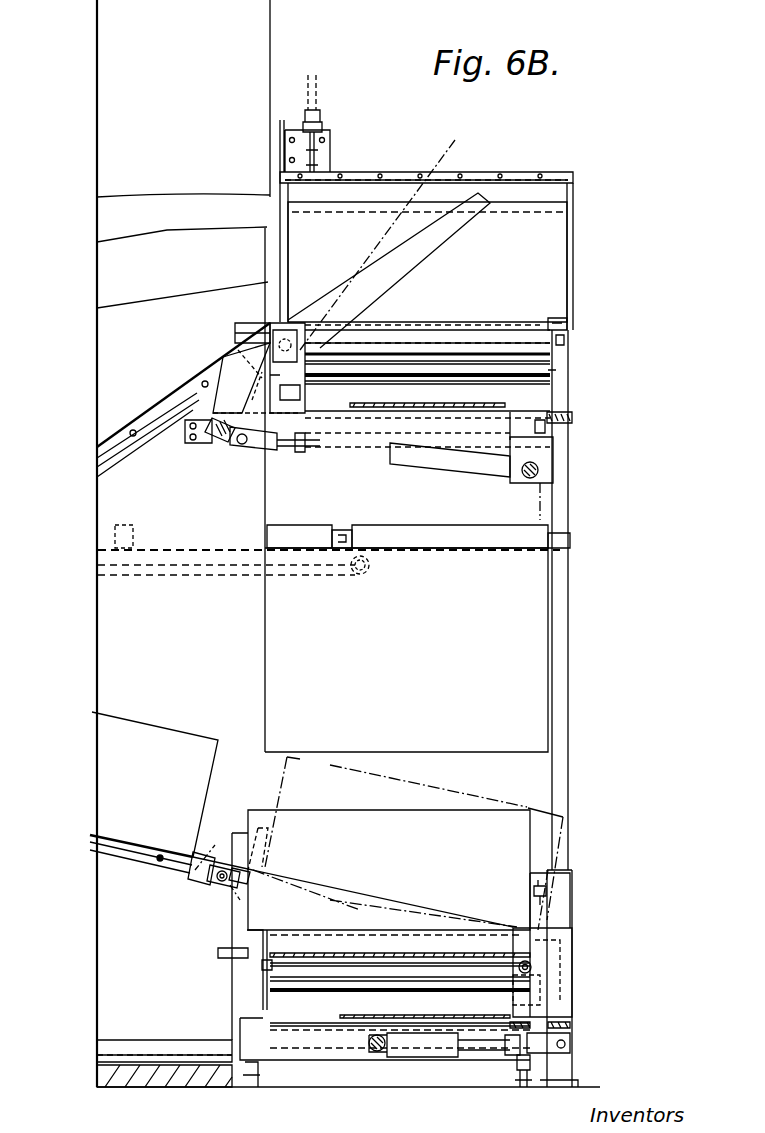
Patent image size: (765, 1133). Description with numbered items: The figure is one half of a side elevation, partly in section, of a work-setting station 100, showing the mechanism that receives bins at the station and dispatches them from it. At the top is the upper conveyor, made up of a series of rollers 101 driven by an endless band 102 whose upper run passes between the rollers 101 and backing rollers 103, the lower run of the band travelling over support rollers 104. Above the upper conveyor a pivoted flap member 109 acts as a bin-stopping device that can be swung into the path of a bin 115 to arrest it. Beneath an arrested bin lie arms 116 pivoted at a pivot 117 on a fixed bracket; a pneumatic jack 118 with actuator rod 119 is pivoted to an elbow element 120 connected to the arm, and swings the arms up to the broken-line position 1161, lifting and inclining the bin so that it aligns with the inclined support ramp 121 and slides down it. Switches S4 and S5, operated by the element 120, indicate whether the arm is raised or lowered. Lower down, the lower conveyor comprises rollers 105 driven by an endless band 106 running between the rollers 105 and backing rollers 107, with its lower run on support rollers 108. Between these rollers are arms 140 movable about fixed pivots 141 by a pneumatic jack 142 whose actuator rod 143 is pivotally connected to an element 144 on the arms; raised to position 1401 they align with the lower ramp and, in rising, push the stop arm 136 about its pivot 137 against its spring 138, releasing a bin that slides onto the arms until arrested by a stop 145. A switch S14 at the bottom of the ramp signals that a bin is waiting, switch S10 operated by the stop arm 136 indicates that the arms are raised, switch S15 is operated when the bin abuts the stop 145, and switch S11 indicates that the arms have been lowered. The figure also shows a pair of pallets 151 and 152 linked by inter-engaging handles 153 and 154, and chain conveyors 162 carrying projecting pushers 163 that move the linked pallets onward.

The work-setting station 100 is at (242, 93).
The rollers 101 is at (570, 350).
The endless band 102 is at (510, 353).
The backing rollers 103 is at (520, 383).
The support rollers 104 is at (530, 405).
The rollers 105 is at (312, 918).
The endless band 106 is at (525, 985).
The backing rollers 107 is at (262, 990).
The support rollers 108 is at (520, 1013).
The flap member 109 is at (525, 185).
The bin 115 is at (545, 237).
The arms 116 is at (548, 322).
The raised position of arms 1161 is at (412, 240).
The pivot 117 is at (265, 333).
The pneumatic jack 118 is at (478, 470).
The actuator rod 119 is at (292, 447).
The elbow element 120 is at (240, 388).
The inclined support ramp 121 is at (145, 416).
The stop arm 136 is at (205, 860).
The pivot 137 is at (218, 890).
The spring 138 is at (218, 953).
The arms 140 is at (363, 937).
The raised position of arms 1401 is at (258, 828).
The fixed pivots 141 is at (531, 967).
The pneumatic jack 142 is at (445, 1040).
The actuator rod 143 is at (478, 1040).
The element 144 is at (555, 978).
The stop 145 is at (545, 905).
The pallet 151 is at (283, 540).
The pallet 152 is at (480, 540).
The handle 153 is at (370, 530).
The handle 154 is at (340, 530).
The chain conveyors 162 is at (302, 578).
The pushers 163 is at (195, 578).
The switch S4 is at (213, 446).
The switch S5 is at (322, 358).
The switch S10 is at (198, 880).
The switch S11 is at (262, 965).
The switch S14 is at (170, 871).
The switch S15 is at (540, 913).